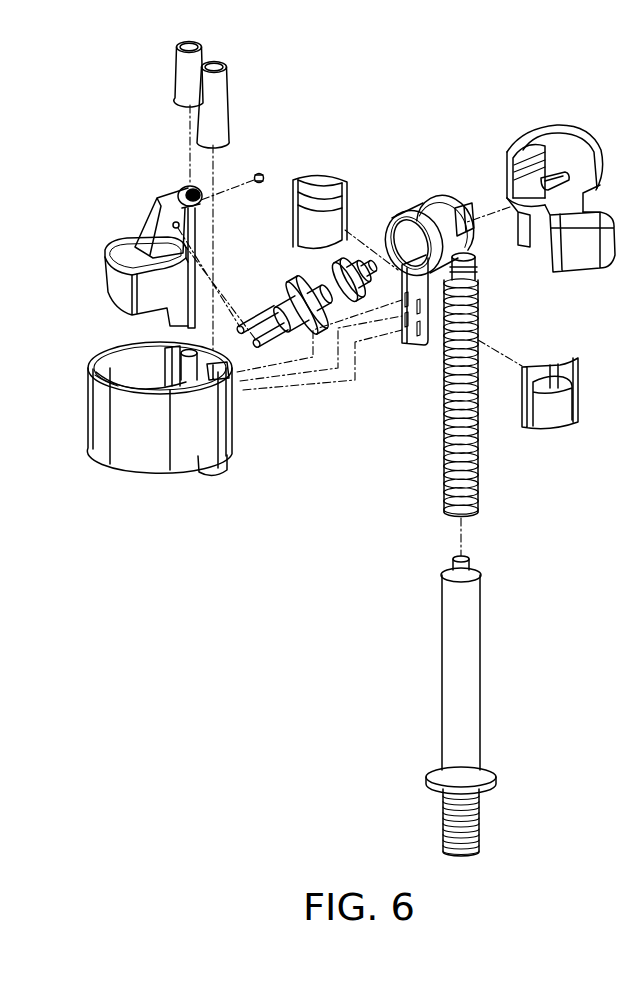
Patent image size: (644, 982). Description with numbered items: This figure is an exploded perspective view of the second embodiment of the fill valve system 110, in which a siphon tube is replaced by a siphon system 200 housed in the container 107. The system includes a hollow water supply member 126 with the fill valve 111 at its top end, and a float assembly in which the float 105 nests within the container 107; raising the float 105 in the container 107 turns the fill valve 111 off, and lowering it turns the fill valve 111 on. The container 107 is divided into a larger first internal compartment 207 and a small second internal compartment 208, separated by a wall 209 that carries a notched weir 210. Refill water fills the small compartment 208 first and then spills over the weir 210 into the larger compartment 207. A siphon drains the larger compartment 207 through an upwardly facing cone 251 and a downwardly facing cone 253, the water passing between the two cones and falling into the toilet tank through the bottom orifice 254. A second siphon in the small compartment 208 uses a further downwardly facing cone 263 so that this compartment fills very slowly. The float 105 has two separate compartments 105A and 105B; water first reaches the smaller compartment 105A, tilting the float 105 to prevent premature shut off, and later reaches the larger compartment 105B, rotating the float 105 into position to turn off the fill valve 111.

The downwardly facing cone 263 is at (187, 80).
The downwardly facing cone 253 is at (217, 120).
The fill valve system 110 is at (543, 101).
The fill valve 111 is at (417, 185).
The float 105 is at (199, 276).
The first float compartment 105A is at (182, 289).
The second float compartment 105B is at (112, 282).
The siphon system 200 is at (209, 428).
The first internal compartment 207 is at (132, 334).
The notched weir 210 is at (163, 372).
The wall 209 is at (180, 380).
The second internal compartment 208 is at (240, 372).
The upwardly facing cone 251 is at (222, 372).
The container 107 is at (147, 462).
The bottom orifice 254 is at (217, 476).
The water supply member 126 is at (497, 483).